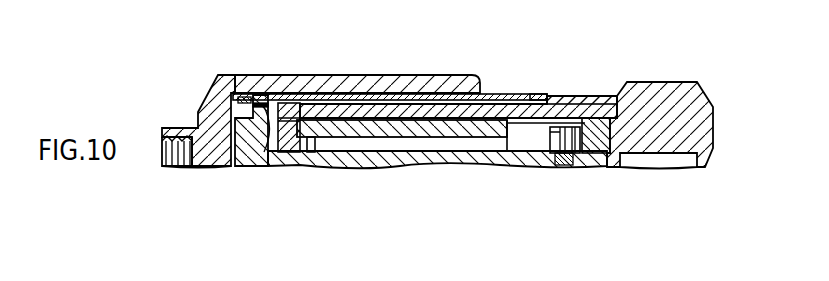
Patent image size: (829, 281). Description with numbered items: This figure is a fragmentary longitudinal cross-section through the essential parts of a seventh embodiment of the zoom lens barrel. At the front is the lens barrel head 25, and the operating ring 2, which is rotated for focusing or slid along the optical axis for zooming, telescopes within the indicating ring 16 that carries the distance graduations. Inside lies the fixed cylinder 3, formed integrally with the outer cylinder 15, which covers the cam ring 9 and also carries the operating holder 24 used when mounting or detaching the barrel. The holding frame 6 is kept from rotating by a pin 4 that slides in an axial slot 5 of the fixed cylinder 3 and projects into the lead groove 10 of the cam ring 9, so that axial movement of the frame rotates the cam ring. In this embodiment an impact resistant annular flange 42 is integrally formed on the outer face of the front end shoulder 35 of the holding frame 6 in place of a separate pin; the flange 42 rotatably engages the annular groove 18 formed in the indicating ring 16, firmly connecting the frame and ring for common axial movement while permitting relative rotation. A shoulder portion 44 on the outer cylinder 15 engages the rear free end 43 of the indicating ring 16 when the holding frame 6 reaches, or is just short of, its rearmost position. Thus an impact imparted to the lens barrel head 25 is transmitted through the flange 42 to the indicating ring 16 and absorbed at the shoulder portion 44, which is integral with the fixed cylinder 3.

The operating ring 2 is at (392, 80).
The fixed cylinder 3 is at (313, 152).
The pin 4 is at (592, 102).
The axial slot 5 is at (535, 130).
The holding frame 6 is at (485, 165).
The cam ring 9 is at (447, 128).
The lead groove 10 is at (552, 160).
The outer cylinder 15 is at (348, 105).
The indicating ring 16 is at (495, 93).
The annular groove 18 is at (240, 97).
The operating holder 24 is at (670, 102).
The lens barrel head 25 is at (181, 128).
The front end shoulder 35 is at (268, 150).
The annular flange 42 is at (265, 98).
The rear free end 43 is at (533, 100).
The shoulder portion 44 is at (570, 103).